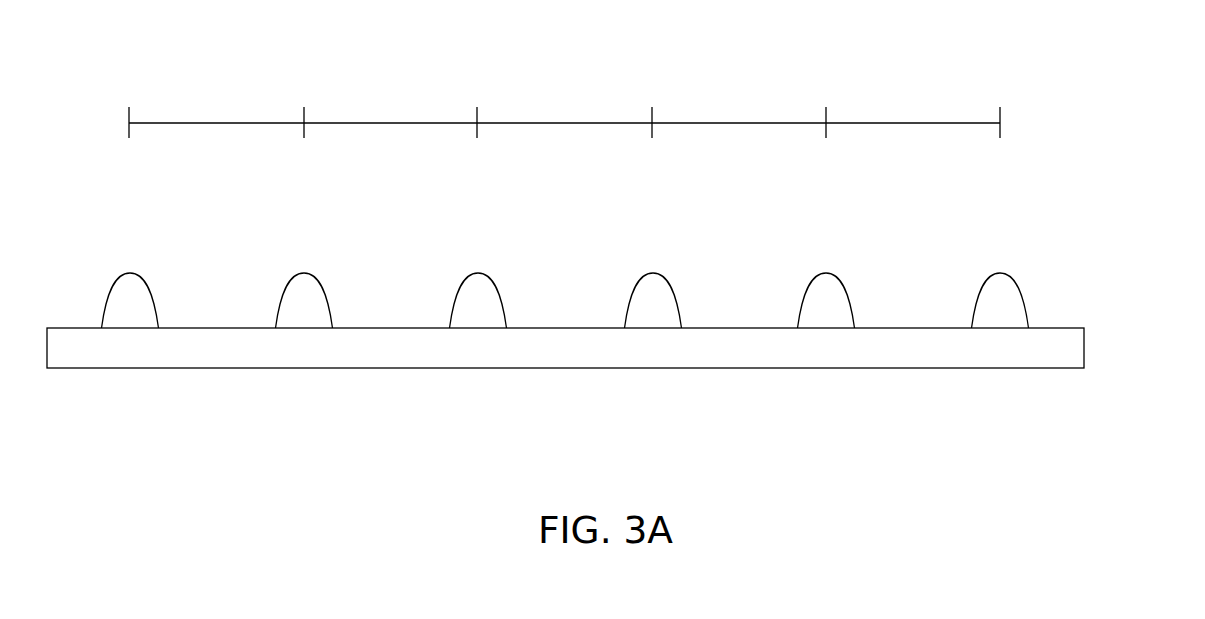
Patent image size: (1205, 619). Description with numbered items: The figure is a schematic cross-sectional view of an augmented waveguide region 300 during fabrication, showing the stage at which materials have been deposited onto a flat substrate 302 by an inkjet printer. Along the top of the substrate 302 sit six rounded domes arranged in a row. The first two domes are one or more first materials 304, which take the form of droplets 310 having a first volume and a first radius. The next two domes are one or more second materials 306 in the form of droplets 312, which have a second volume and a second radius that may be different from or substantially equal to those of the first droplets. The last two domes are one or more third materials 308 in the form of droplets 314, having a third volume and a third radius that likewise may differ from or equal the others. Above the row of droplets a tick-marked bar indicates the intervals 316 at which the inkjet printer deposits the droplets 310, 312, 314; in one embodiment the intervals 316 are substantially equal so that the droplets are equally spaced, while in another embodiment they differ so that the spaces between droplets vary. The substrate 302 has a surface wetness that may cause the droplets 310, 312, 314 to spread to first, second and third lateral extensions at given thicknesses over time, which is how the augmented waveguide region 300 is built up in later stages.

The augmented waveguide region 300 is at (1075, 65).
The substrate 302 is at (1085, 338).
The first materials 304 is at (240, 255).
The second materials 306 is at (596, 252).
The third materials 308 is at (940, 261).
The droplets 310 is at (150, 280).
The droplets 312 is at (497, 278).
The droplets 314 is at (842, 278).
The intervals 316 is at (225, 122).